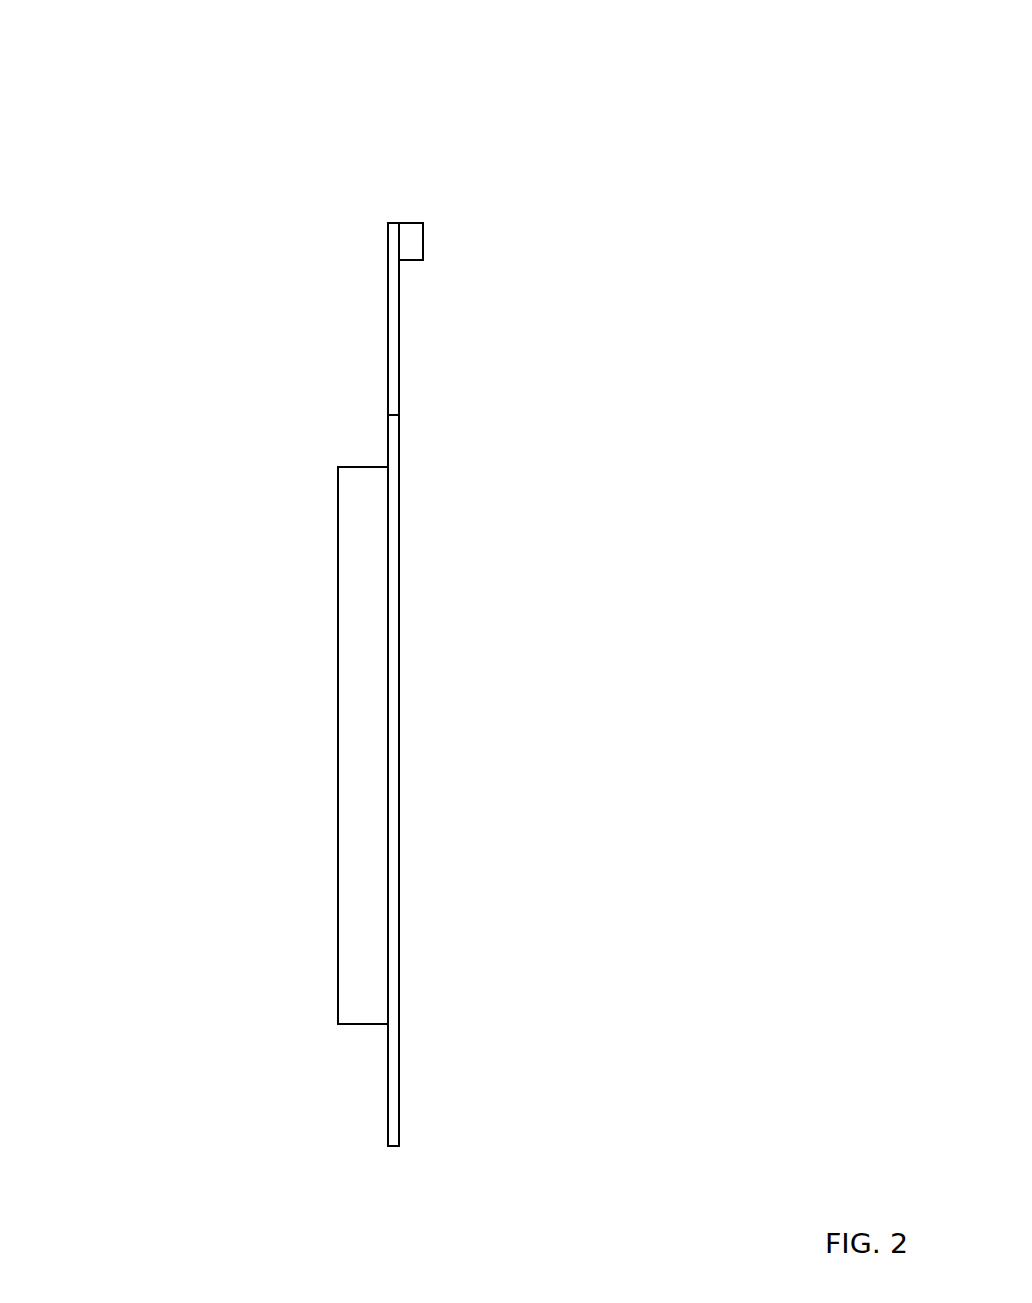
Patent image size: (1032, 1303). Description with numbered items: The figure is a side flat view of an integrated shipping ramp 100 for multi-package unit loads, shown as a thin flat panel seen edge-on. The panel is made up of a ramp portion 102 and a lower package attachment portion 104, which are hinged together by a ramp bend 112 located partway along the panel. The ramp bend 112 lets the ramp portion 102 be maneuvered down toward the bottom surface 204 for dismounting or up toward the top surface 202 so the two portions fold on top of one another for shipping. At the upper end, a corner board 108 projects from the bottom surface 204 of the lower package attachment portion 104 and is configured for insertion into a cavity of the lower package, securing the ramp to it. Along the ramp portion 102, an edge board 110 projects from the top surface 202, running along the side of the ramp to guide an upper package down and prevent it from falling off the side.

The integrated shipping ramp 100 is at (459, 579).
The ramp portion 102 is at (526, 780).
The lower package attachment portion 104 is at (603, 319).
The corner board 108 is at (538, 208).
The edge board 110 is at (255, 745).
The ramp bend 112 is at (510, 377).
The top surface 202 is at (214, 723).
The bottom surface 204 is at (553, 780).